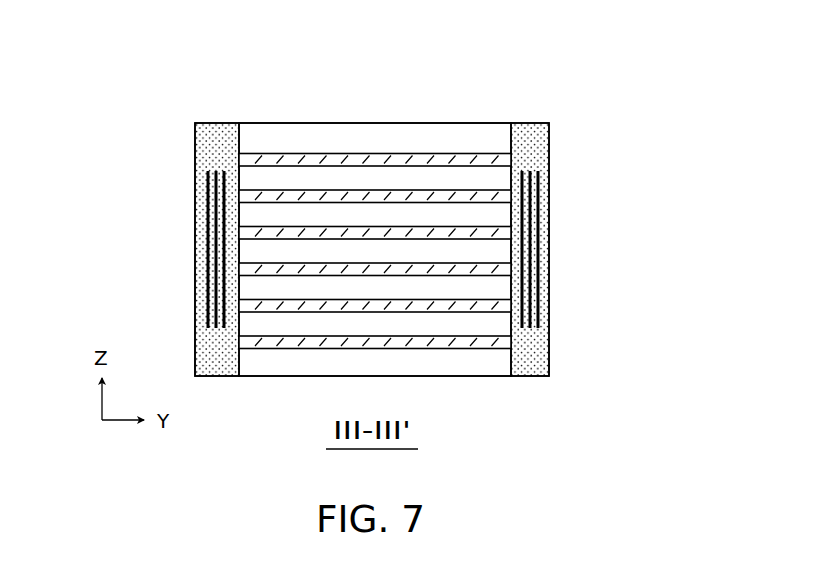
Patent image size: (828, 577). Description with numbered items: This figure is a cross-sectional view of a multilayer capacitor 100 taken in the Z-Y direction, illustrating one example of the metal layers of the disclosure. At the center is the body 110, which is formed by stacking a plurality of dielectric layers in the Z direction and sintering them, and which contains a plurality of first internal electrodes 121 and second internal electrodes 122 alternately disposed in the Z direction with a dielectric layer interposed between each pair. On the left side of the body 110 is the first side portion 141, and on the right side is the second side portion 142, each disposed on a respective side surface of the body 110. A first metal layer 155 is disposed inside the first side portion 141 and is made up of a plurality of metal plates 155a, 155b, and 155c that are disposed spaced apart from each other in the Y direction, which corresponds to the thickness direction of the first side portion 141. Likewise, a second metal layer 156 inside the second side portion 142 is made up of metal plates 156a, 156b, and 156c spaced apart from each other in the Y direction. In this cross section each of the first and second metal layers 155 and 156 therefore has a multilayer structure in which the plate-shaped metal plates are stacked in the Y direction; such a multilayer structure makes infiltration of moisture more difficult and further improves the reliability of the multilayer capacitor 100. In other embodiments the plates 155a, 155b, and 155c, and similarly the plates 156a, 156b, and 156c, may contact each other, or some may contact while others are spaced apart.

The multilayer capacitor 100 is at (470, 118).
The body 110 is at (284, 123).
The first internal electrode 121 is at (368, 155).
The second internal electrode 122 is at (427, 196).
The first side portion 141 is at (215, 140).
The second side portion 142 is at (523, 140).
The first metal layer 155 is at (140, 249).
The metal plate 155a is at (208, 215).
The metal plate 155b is at (216, 251).
The metal plate 155c is at (224, 290).
The second metal layer 156 is at (603, 249).
The metal plate 156a is at (538, 215).
The metal plate 156b is at (530, 251).
The metal plate 156c is at (522, 290).